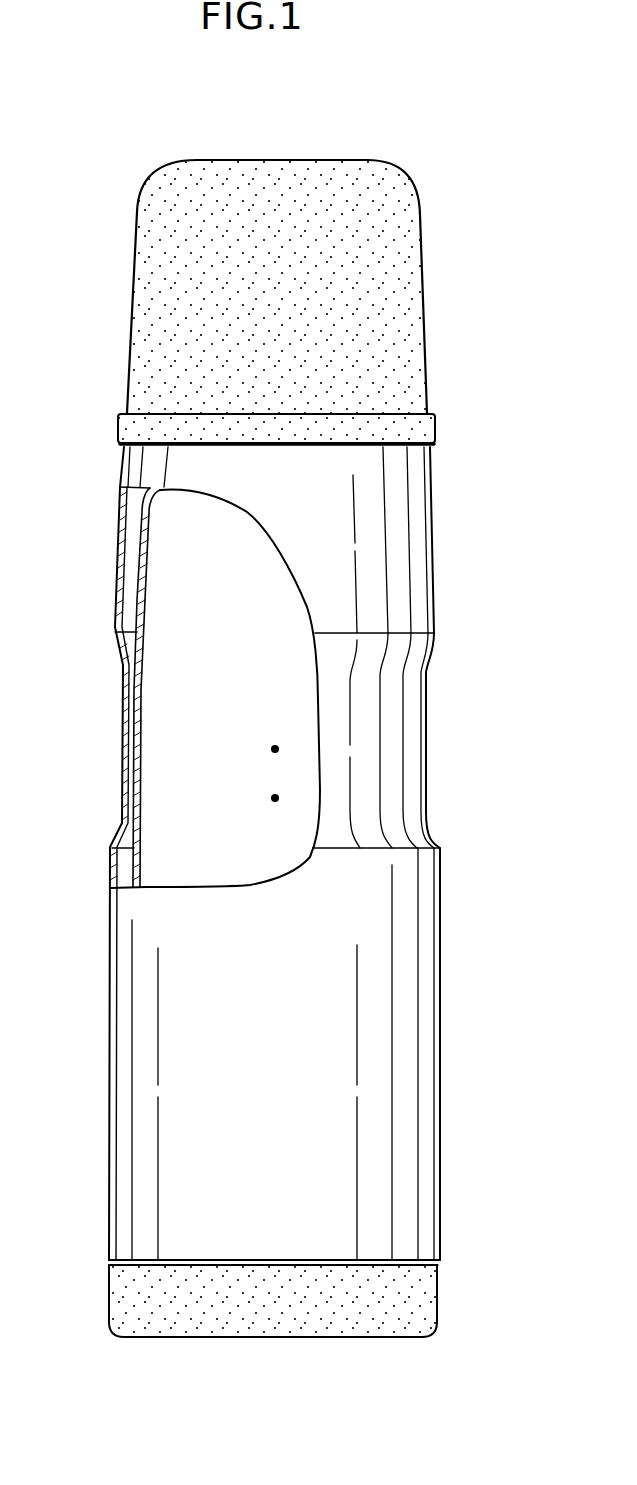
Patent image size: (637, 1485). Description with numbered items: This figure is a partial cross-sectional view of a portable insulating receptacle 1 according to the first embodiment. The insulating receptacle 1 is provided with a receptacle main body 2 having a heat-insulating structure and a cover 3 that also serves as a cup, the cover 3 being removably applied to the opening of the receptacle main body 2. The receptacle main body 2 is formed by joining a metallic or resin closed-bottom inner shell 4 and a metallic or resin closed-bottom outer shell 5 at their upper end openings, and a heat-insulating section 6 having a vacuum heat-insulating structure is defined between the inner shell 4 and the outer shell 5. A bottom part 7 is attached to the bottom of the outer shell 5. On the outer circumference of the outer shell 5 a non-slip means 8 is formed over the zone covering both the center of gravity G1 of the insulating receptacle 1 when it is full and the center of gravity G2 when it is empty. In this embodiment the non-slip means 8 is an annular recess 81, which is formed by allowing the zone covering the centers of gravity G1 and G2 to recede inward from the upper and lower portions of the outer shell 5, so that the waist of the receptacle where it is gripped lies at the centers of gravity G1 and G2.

The insulating receptacle 1 is at (268, 144).
The receptacle main body 2 is at (446, 933).
The cover 3 is at (410, 292).
The inner shell 4 is at (140, 611).
The outer shell 5 is at (121, 548).
The heat-insulating section 6 is at (130, 588).
The bottom part 7 is at (414, 1297).
The non-slip means 8 is at (442, 667).
The annular recess 81 is at (418, 750).
The center of gravity when full G1 is at (270, 799).
The center of gravity when empty G2 is at (270, 749).